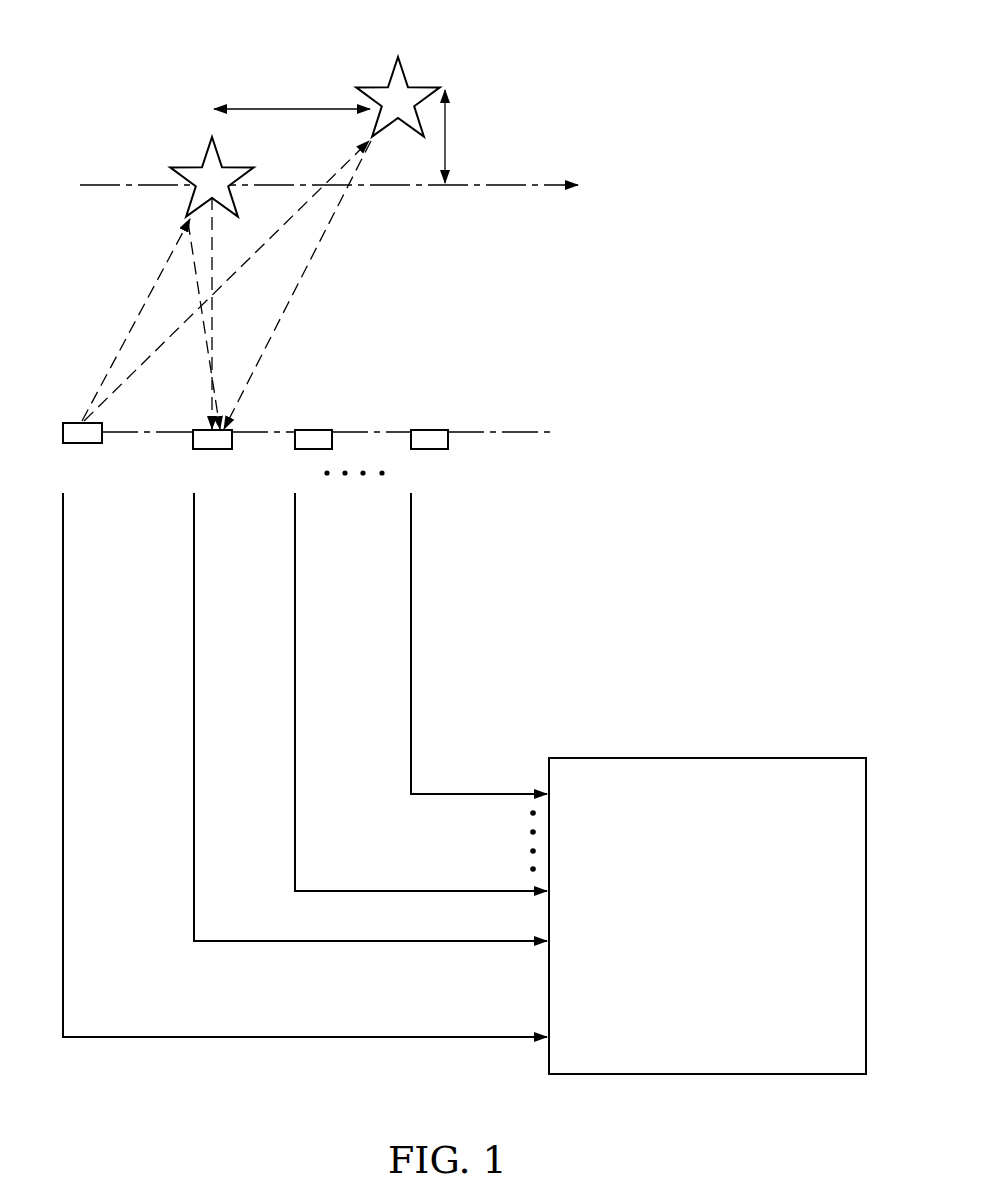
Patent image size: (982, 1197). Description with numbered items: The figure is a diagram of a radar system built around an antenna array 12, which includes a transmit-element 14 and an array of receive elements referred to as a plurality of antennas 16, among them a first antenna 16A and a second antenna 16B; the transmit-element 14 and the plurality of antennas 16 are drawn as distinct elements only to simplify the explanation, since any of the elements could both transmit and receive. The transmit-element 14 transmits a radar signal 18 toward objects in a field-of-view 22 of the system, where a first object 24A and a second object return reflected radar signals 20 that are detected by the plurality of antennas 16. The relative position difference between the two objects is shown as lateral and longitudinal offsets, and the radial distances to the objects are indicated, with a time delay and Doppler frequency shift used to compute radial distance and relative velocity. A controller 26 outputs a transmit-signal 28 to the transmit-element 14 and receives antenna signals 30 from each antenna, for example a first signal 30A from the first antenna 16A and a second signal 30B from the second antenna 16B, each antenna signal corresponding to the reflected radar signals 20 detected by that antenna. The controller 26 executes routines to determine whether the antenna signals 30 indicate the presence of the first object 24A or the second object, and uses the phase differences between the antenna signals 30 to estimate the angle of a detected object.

The antenna array 12 is at (502, 340).
The transmit-element 14 is at (80, 423).
The plurality of antennas 16 is at (495, 510).
The first antenna 16A is at (231, 430).
The second antenna 16B is at (320, 432).
The radar signal 18 is at (193, 315).
The reflected radar signals 20 is at (212, 317).
The field-of-view 22 is at (466, 55).
The first object 24A is at (203, 173).
The controller 26 is at (752, 758).
The transmit-signal 28 is at (225, 1037).
The antenna signals 30 is at (194, 748).
The first signal 30A is at (257, 941).
The second signal 30B is at (313, 891).